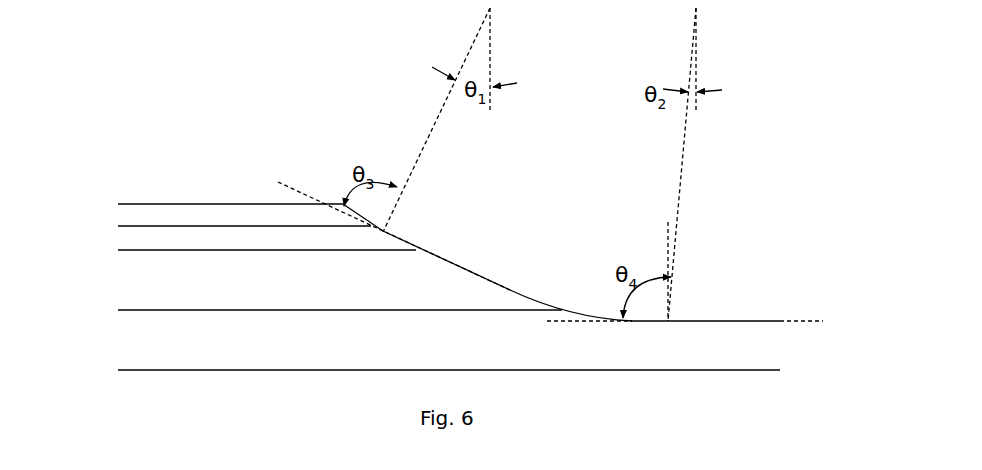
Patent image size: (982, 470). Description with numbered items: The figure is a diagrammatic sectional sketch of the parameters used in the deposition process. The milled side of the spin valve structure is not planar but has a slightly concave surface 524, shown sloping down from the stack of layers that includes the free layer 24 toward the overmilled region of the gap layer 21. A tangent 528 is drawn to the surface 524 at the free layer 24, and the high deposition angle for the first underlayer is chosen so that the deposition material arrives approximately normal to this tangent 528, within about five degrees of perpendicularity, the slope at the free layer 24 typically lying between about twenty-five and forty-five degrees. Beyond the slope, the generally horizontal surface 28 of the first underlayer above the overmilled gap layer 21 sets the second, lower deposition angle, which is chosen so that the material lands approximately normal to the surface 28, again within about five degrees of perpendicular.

The substrate 21 is at (225, 352).
The free layer 24 is at (133, 239).
The surface 524 is at (396, 236).
The tangent 528 is at (300, 188).
The surface 28 is at (800, 320).